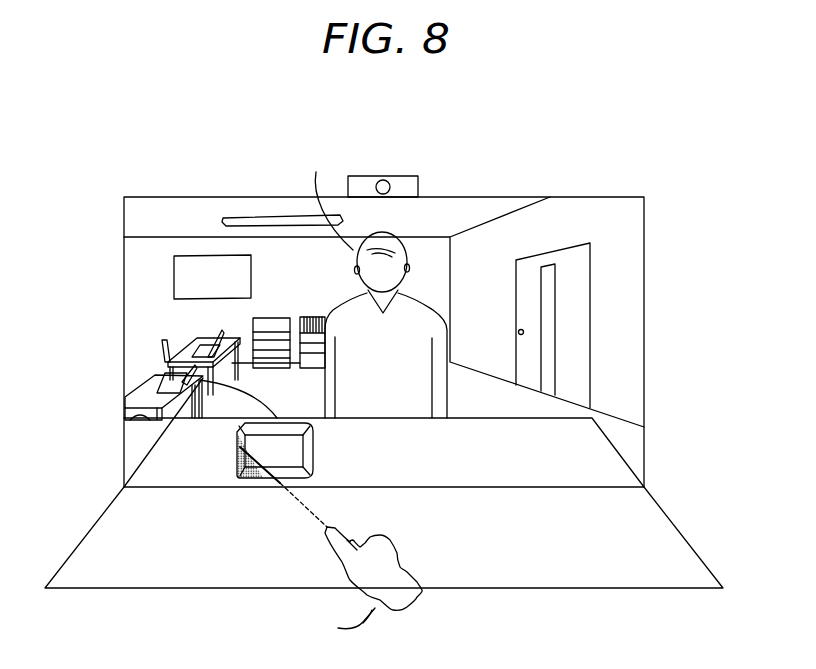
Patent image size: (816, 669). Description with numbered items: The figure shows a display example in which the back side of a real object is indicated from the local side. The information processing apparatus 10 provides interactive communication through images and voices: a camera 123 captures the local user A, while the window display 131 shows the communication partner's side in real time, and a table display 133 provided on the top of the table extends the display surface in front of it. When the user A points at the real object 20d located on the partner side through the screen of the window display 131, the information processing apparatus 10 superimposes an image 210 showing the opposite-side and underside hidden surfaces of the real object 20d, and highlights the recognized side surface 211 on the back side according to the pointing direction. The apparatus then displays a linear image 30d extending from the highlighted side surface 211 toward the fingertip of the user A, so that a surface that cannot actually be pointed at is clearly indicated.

The information processing apparatus 10 is at (594, 169).
The camera 123 is at (397, 176).
The window display 131 is at (645, 222).
The table display 133 is at (672, 523).
The image showing hidden surfaces 210 is at (155, 378).
The side surface 211 is at (237, 432).
The real object 20d is at (231, 453).
The linear image 30d is at (262, 488).